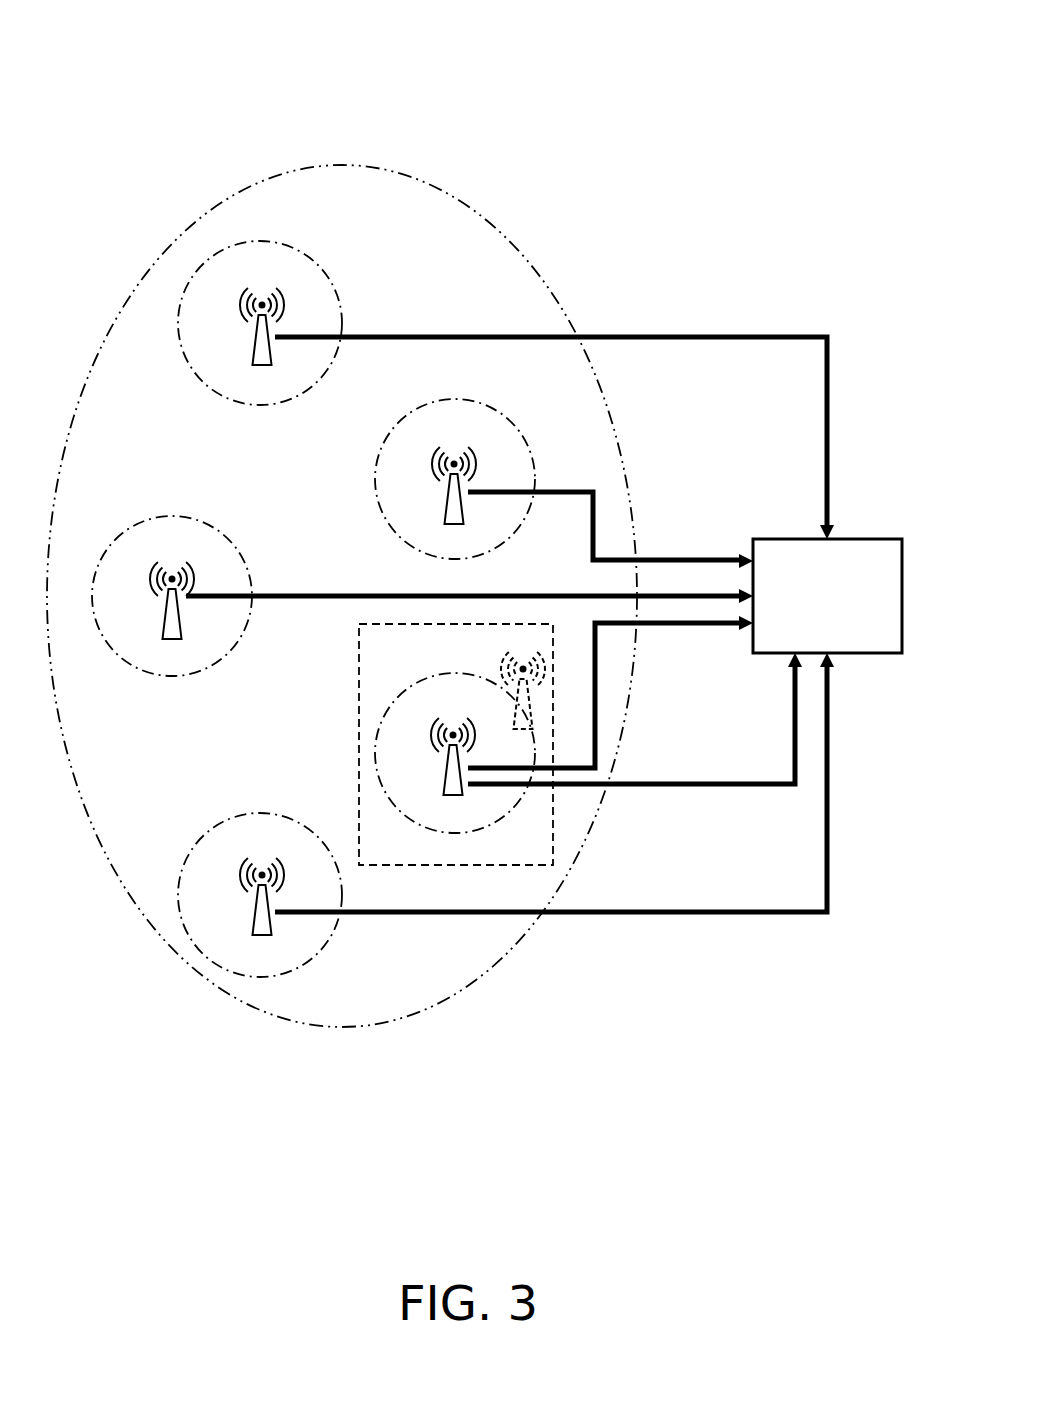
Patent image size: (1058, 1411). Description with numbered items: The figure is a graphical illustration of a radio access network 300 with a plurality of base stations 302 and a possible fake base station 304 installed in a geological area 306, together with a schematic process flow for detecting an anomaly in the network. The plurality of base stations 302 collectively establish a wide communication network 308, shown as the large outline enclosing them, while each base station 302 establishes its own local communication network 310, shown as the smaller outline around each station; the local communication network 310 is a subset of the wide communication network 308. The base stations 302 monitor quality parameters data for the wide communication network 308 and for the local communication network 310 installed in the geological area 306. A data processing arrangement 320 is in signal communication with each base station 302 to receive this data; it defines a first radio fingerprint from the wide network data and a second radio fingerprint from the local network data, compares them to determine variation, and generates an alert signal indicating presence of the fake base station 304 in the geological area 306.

The radio access network 300 is at (812, 95).
The base station 302 is at (262, 305).
The fake base station 304 is at (510, 669).
The geological area 306 is at (456, 744).
The wide communication network 308 is at (478, 210).
The local communication network 310 is at (342, 298).
The data processing arrangement 320 is at (544, 624).